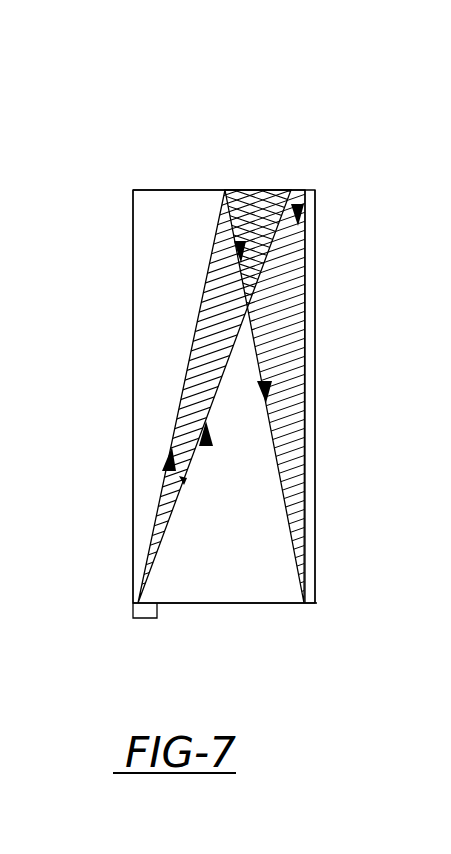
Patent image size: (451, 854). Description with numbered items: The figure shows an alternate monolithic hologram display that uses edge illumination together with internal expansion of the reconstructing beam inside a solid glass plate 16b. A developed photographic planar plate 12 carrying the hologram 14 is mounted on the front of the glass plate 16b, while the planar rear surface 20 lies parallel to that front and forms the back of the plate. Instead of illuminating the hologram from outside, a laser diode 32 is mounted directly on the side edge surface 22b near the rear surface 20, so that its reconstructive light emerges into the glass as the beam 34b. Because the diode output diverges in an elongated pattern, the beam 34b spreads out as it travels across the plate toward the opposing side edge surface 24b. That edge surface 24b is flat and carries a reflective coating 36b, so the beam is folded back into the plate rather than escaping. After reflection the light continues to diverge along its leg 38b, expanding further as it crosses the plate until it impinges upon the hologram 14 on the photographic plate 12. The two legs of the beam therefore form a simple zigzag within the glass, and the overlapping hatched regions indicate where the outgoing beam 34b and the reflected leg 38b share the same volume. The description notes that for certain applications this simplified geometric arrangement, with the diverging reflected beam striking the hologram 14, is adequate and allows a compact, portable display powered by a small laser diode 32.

The developed photographic planar plate 12 is at (312, 190).
The hologram 14 is at (305, 190).
The glass plate 16b is at (180, 190).
The rear surface 20 is at (133, 460).
The side edge surface 22b is at (265, 603).
The opposing side edge surface 24b is at (217, 190).
The laser diode 32 is at (138, 618).
The beam 34b is at (192, 450).
The reflective coating 36b is at (142, 190).
The leg 38b is at (297, 243).